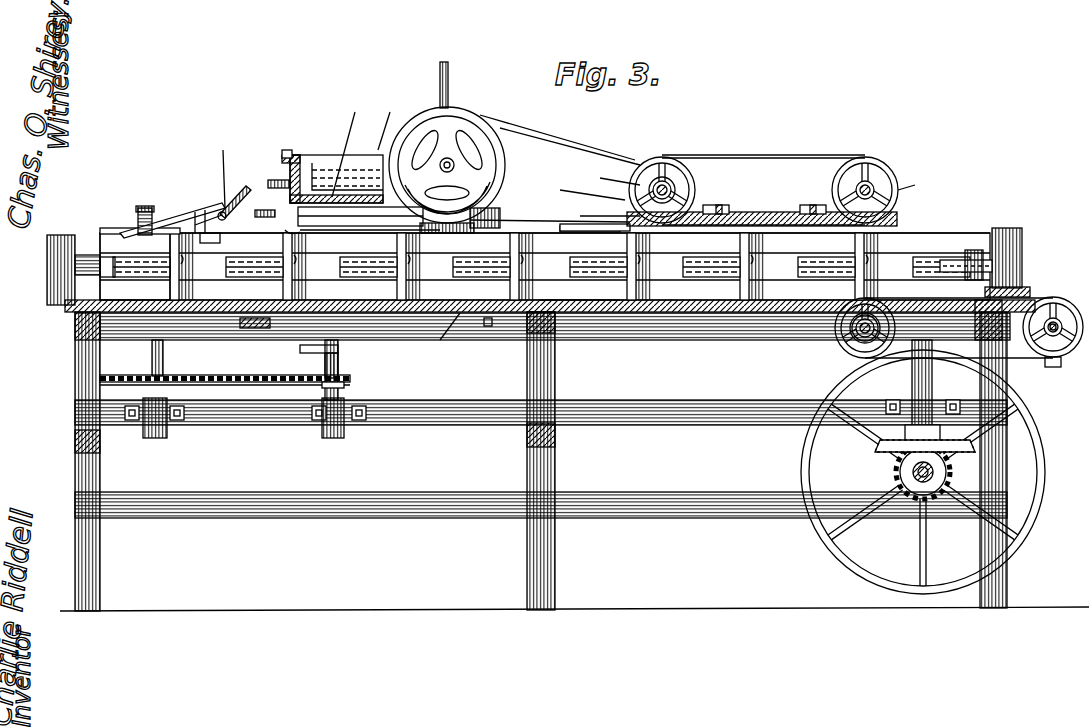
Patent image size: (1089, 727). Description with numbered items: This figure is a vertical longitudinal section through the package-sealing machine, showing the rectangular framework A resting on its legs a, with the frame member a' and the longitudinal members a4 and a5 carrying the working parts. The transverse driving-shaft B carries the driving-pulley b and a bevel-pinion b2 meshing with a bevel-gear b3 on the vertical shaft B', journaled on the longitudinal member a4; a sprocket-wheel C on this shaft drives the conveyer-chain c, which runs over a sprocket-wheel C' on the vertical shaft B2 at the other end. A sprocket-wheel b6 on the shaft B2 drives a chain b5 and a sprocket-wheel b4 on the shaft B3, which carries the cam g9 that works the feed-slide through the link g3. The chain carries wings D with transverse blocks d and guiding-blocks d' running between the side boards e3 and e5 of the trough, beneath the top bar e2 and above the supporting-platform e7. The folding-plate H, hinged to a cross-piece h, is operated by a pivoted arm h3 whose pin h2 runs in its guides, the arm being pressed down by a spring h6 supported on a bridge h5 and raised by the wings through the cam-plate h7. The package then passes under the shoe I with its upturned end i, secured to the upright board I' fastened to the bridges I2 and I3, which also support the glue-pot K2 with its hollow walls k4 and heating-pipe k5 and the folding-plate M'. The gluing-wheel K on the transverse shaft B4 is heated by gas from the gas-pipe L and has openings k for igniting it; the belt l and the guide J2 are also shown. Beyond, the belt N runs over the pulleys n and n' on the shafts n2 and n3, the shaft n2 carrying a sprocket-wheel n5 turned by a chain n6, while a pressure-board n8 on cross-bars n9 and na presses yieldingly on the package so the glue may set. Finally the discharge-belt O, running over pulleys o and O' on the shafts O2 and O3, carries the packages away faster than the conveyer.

The rectangular framework A is at (550, 333).
The legs a is at (549, 455).
The frame member a' is at (541, 494).
The longitudinal member a4 is at (541, 398).
The longitudinal member a5 is at (648, 340).
The driving-shaft B is at (919, 509).
The vertical shaft B' is at (944, 371).
The vertical shaft B2 is at (163, 358).
The shaft B3 is at (345, 372).
The transverse shaft B4 is at (452, 158).
The driving-pulley b is at (805, 448).
The bevel-pinion b2 is at (930, 490).
The bevel-gear b3 is at (880, 452).
The sprocket-wheel b4 is at (350, 384).
The chain b5 is at (228, 385).
The sprocket-wheel b6 is at (100, 378).
The sprocket-wheel C is at (966, 252).
The sprocket-wheel C' is at (123, 279).
The conveyer-chain c is at (248, 257).
The wings D is at (992, 240).
The transverse vertical blocks d is at (106, 239).
The longitudinal guiding-blocks d' is at (523, 255).
The longitudinal bar e2 is at (112, 236).
The lateral guide e3 is at (545, 250).
The lateral guide e5 is at (580, 288).
The supporting-platform e7 is at (465, 338).
The link g3 is at (258, 328).
The cam g9 is at (340, 352).
The folding-plate H is at (225, 183).
The cross-piece h is at (181, 220).
The pin h2 is at (233, 200).
The pivoted arm h3 is at (215, 192).
The bridge h5 is at (147, 208).
The spring h6 is at (136, 207).
The cam-plate h7 is at (210, 246).
The shoe I is at (339, 253).
The upright board I' is at (345, 165).
The bridge I2 is at (346, 145).
The bridge I3 is at (388, 121).
The upturned end i is at (361, 257).
The slide J2 is at (345, 210).
The gluing-wheel K is at (500, 135).
The glue-pot K2 is at (292, 162).
The openings k is at (470, 168).
The hollow walls k4 is at (285, 152).
The heating-pipe k5 is at (274, 183).
The gas-pipe L is at (448, 70).
The belt l is at (555, 168).
The folding-plate M' is at (600, 202).
The belt N is at (738, 155).
The pulley n is at (662, 171).
The pulley n' is at (912, 178).
The shaft n2 is at (665, 182).
The shaft n3 is at (866, 182).
The sprocket-wheel n5 is at (640, 170).
The chain n6 is at (588, 183).
The pressure-board n8 is at (740, 220).
The cross-bar n9 is at (718, 212).
The cross-bar na is at (812, 205).
The discharge-belt O is at (1053, 304).
The pulley O' is at (853, 347).
The shaft O2 is at (1053, 358).
The shaft O3 is at (850, 338).
The pulley o is at (1055, 297).